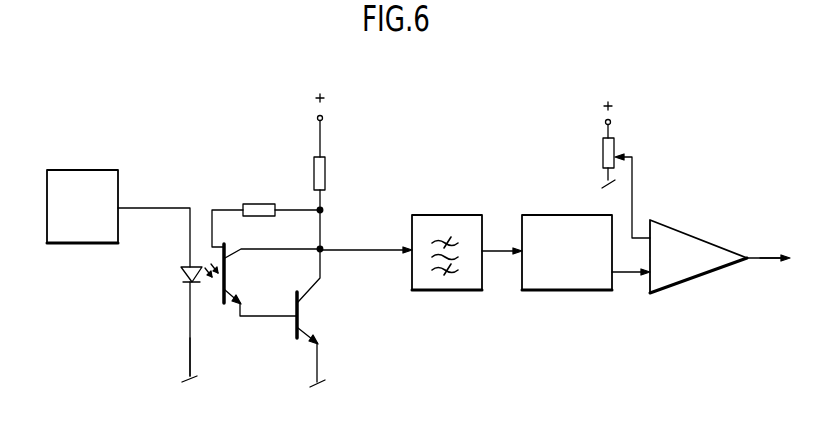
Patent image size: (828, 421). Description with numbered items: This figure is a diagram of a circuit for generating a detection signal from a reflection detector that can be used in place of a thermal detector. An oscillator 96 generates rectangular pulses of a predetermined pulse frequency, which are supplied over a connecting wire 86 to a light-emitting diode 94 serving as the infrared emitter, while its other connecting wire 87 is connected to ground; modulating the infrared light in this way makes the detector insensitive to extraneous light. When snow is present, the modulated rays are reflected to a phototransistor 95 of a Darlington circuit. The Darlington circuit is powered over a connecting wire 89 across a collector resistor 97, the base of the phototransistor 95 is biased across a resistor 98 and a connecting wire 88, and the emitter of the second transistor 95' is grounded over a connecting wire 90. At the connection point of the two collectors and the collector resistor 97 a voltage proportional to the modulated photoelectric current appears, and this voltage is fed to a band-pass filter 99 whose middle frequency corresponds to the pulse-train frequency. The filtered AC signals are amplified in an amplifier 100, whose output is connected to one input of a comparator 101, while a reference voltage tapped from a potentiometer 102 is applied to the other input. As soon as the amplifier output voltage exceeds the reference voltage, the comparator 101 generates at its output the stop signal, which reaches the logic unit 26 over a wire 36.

The oscillator 96 is at (73, 181).
The connecting wire 86 is at (154, 208).
The light-emitting diode 94 is at (178, 272).
The connecting wire 87 is at (190, 338).
The connecting wire 88 is at (223, 208).
The resistor 98 is at (257, 208).
The collector resistor 97 is at (324, 176).
The phototransistor 95 is at (272, 280).
The connecting wire 89 is at (323, 278).
The transistor 95' is at (326, 337).
The connecting wire 90 is at (318, 366).
The band-pass filter 99 is at (443, 222).
The amplifier 100 is at (546, 228).
The potentiometer 102 is at (613, 150).
The comparator 101 is at (688, 247).
The wire 36 is at (761, 257).
The logic unit 26 is at (776, 274).